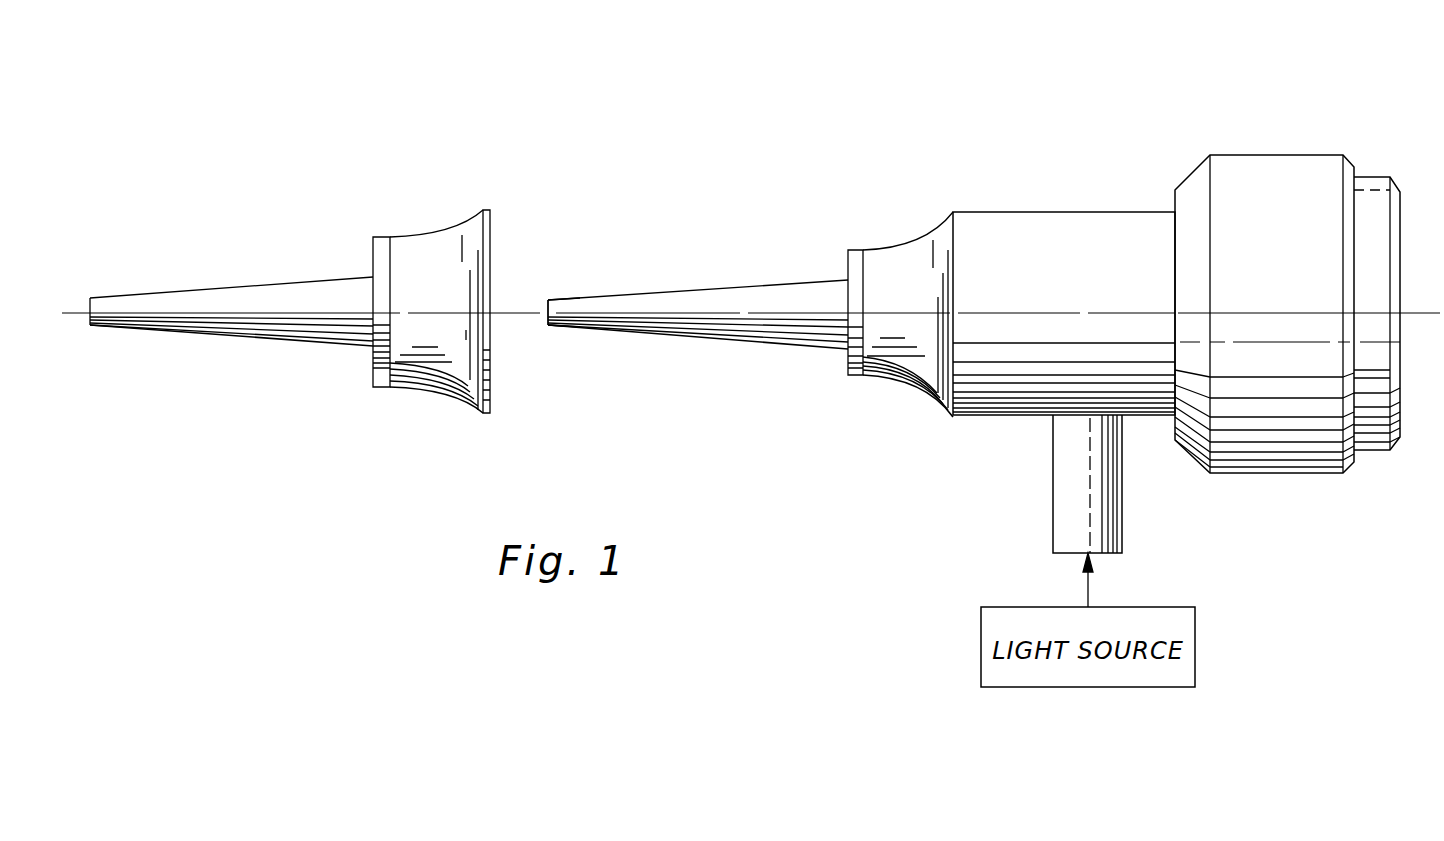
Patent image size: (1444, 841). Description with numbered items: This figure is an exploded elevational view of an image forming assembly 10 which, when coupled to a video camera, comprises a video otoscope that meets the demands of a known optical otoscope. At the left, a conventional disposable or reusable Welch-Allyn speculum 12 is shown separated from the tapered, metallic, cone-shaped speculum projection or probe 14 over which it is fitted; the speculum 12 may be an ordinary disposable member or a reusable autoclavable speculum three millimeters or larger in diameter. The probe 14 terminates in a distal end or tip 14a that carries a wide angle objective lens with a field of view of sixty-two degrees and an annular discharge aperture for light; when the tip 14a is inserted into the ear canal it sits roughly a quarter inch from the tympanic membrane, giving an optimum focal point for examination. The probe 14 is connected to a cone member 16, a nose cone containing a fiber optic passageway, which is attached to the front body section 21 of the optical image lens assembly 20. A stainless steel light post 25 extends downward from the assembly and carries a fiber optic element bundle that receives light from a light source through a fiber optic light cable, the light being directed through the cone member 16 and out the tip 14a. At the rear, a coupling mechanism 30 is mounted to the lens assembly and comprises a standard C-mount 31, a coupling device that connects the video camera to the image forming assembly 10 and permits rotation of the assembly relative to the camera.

The image forming assembly 10 is at (690, 164).
The speculum 12 is at (245, 290).
The speculum projection or probe 14 is at (700, 340).
The distal end or tip 14a is at (548, 302).
The cone member 16 is at (904, 258).
The optical image lens assembly 20 is at (1058, 205).
The front body section 21 is at (1078, 303).
The light post 25 is at (1062, 510).
The coupling mechanism 30 is at (1270, 146).
The C-mount 31 is at (1381, 465).